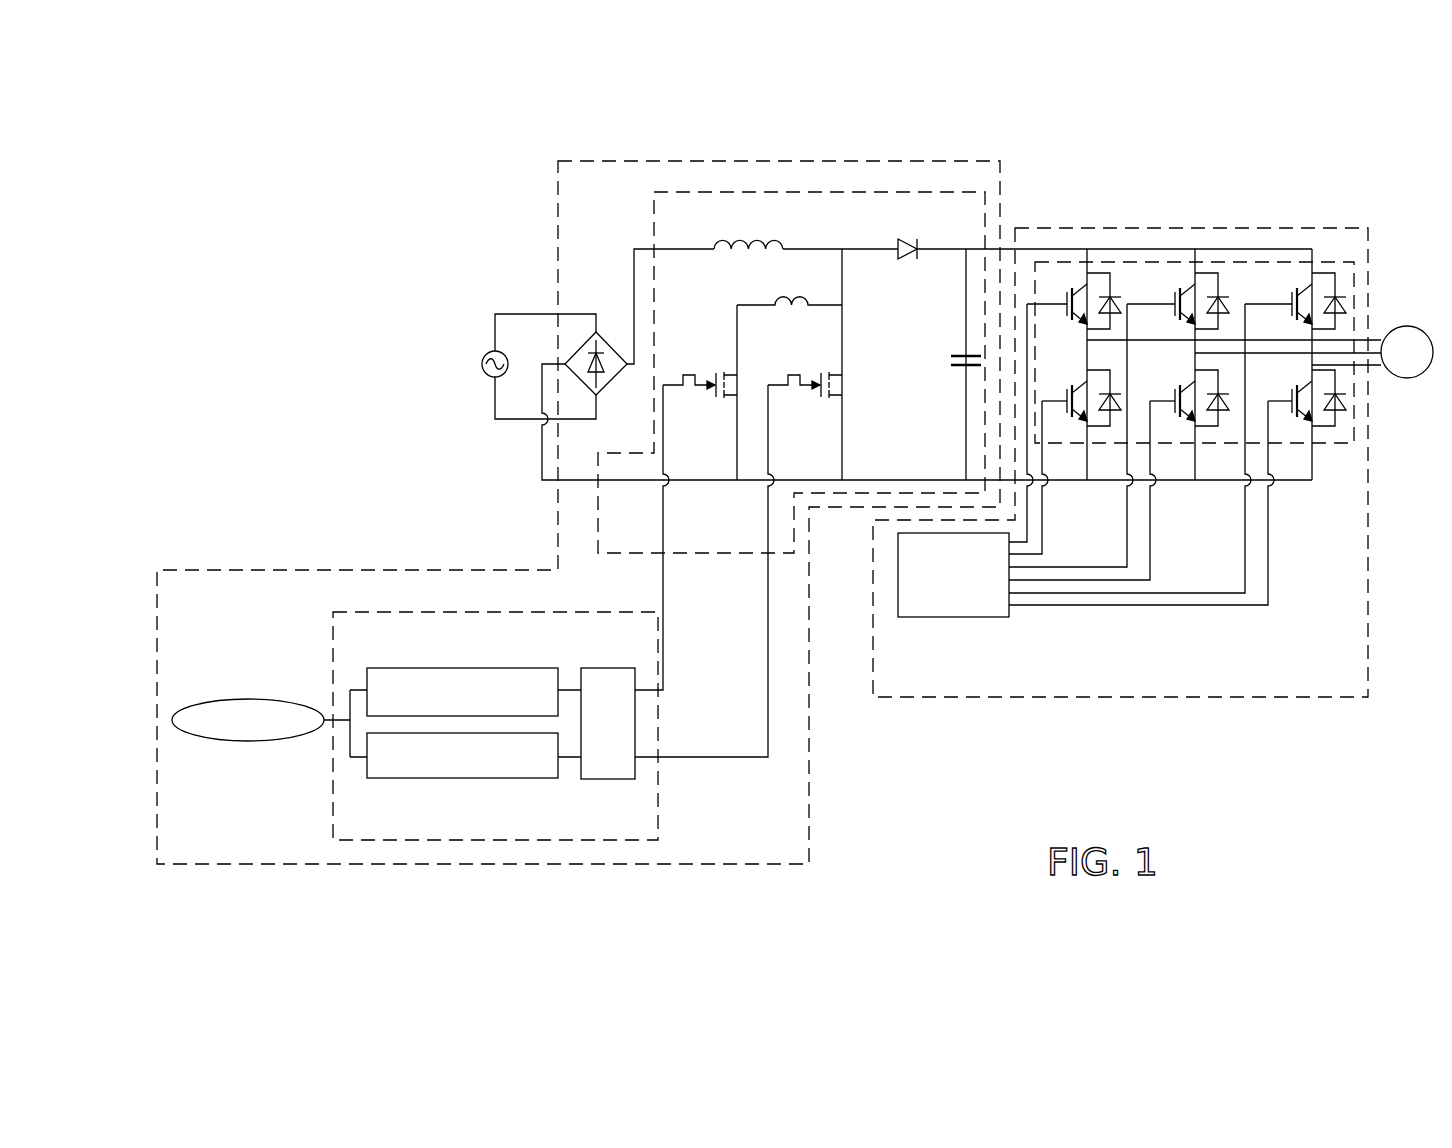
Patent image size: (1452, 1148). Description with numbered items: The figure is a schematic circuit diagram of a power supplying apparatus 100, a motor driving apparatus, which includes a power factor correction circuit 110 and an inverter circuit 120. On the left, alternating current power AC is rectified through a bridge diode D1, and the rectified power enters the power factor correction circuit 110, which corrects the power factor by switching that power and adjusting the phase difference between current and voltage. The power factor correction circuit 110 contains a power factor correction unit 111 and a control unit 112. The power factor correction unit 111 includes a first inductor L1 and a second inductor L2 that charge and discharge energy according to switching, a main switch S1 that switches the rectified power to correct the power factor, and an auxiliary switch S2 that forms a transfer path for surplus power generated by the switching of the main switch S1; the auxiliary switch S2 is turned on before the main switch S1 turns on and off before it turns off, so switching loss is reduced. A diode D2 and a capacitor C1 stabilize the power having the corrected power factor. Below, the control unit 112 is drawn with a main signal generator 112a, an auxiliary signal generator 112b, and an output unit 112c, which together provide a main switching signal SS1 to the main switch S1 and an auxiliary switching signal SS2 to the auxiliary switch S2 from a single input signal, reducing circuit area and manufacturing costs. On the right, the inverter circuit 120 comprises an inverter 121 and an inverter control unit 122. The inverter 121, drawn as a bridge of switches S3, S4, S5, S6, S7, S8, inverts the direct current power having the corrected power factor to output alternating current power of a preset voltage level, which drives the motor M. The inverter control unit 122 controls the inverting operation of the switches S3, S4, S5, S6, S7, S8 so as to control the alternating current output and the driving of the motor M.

The power supplying apparatus 100 is at (438, 164).
The power factor correction circuit 110 is at (809, 789).
The power factor correction unit 111 is at (654, 226).
The control unit 112 is at (333, 670).
The main signal generator 112a is at (463, 668).
The auxiliary signal generator 112b is at (471, 778).
The output unit 112c is at (613, 778).
The inverter circuit 120 is at (1156, 697).
The inverter 121 is at (1336, 443).
The inverter control unit 122 is at (950, 617).
The alternating current power AC is at (474, 364).
The bridge diode D1 is at (600, 357).
The diode D2 is at (912, 230).
The first inductor L1 is at (748, 229).
The second inductor L2 is at (789, 286).
The main switch S1 is at (805, 370).
The auxiliary switch S2 is at (700, 370).
The capacitor C1 is at (946, 364).
The main switching signal SS1 is at (704, 571).
The auxiliary switching signal SS2 is at (641, 537).
The inverter switch S3 is at (1074, 294).
The inverter switch S4 is at (1081, 410).
The inverter switch S5 is at (1178, 301).
The inverter switch S6 is at (1189, 416).
The inverter switch S7 is at (1295, 307).
The inverter switch S8 is at (1307, 422).
The motor M is at (1407, 352).